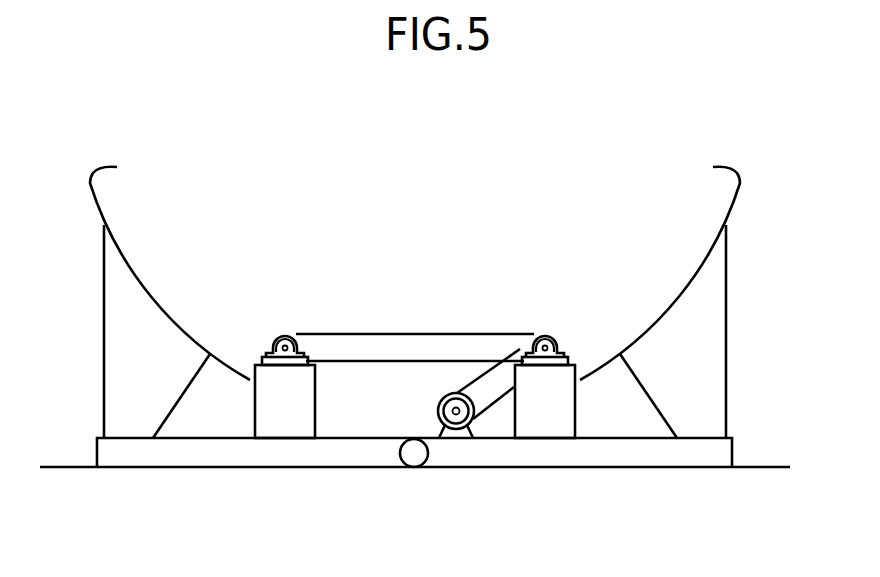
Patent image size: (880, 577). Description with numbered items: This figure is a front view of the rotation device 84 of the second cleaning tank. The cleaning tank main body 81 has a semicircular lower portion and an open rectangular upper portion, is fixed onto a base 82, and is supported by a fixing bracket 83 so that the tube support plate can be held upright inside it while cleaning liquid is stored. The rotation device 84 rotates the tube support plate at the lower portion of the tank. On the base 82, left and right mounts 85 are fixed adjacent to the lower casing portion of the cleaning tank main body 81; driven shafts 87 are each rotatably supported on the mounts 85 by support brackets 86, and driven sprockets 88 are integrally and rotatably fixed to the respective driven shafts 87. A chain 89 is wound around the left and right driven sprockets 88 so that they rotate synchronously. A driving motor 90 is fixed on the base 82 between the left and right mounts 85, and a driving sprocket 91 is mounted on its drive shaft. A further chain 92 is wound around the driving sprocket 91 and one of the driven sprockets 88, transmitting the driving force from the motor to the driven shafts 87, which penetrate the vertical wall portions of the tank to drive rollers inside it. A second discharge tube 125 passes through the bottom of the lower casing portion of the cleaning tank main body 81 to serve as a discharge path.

The cleaning tank main body 81 is at (738, 208).
The base 82 is at (727, 453).
The fixing bracket 83 is at (120, 350).
The rotation device 84 is at (449, 298).
The mounts 85 is at (283, 425).
The support brackets 86 is at (299, 342).
The driven shafts 87 is at (285, 342).
The driven sprockets 88 is at (270, 350).
The chain 89 is at (367, 334).
The driving motor 90 is at (458, 418).
The driving sprocket 91 is at (461, 420).
The chain 92 is at (490, 397).
The second discharge tube (discharge path) 125 is at (414, 467).